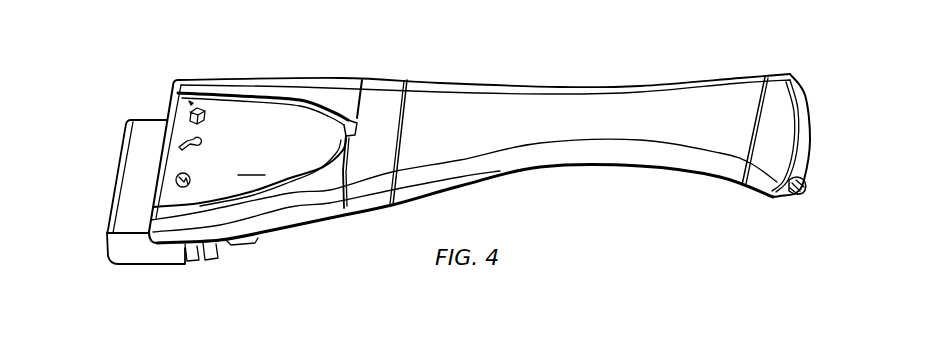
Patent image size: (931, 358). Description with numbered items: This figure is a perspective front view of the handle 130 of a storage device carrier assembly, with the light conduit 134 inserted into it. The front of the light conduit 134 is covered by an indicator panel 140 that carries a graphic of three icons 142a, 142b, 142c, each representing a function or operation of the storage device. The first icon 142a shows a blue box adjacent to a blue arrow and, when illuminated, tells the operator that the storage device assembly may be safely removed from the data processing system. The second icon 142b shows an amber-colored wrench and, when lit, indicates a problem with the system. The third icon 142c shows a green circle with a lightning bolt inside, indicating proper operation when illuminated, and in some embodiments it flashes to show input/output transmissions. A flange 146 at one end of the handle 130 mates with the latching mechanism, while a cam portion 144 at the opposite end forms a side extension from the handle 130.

The handle 130 is at (685, 108).
The light conduit 134 is at (233, 118).
The indicator panel 140 is at (212, 153).
The icon 142a is at (158, 107).
The icon 142b is at (153, 144).
The icon 142c is at (143, 183).
The cam portion 144 is at (137, 260).
The flange 146 is at (808, 171).